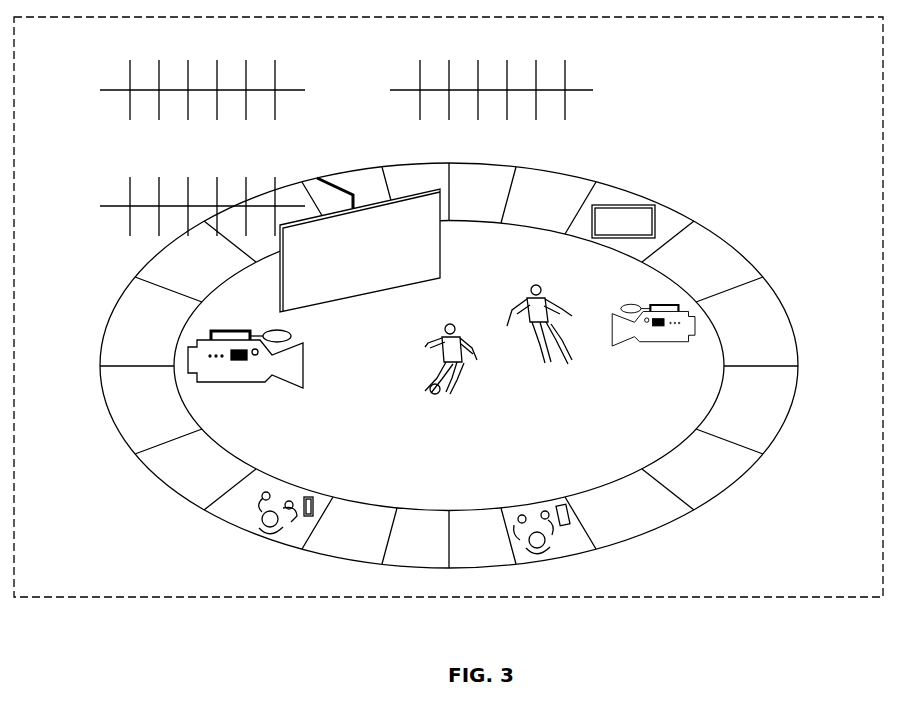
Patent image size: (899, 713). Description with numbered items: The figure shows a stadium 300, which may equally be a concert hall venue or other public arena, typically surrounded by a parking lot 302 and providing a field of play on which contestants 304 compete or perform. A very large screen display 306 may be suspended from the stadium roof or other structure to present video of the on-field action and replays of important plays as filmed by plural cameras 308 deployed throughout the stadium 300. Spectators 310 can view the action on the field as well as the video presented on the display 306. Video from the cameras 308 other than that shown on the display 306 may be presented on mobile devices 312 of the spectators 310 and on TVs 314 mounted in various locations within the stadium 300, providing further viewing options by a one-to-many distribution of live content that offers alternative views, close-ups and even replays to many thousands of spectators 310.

The stadium 300 is at (192, 478).
The parking lot 302 is at (448, 307).
The contestants 304 is at (425, 345).
The very large screen display 306 is at (422, 235).
The cameras 308 is at (660, 342).
The spectators 310 is at (257, 518).
The mobile devices 312 is at (312, 500).
The TVs 314 is at (652, 240).